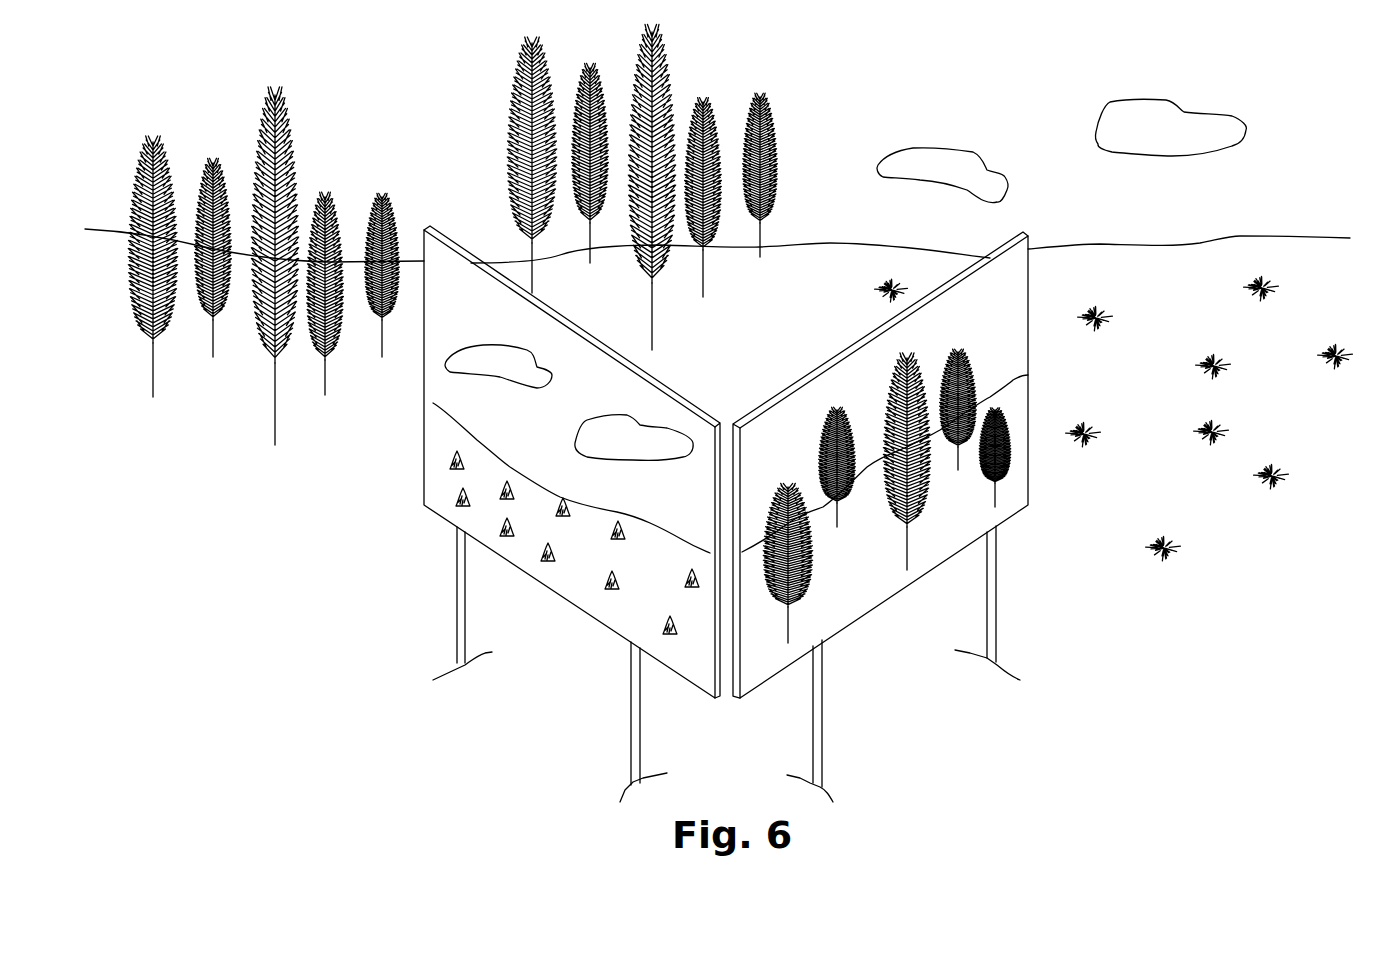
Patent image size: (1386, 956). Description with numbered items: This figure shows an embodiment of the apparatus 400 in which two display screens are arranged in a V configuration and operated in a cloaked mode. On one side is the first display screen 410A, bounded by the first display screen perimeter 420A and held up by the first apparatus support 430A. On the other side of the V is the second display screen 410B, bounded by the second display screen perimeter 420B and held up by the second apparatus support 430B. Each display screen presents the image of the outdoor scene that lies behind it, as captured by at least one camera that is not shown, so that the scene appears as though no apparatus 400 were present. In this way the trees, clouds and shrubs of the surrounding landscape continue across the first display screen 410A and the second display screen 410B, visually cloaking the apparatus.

The apparatus 400 is at (824, 152).
The first display screen 410A is at (450, 277).
The second display screen 410B is at (1022, 273).
The first display screen perimeter 420A is at (423, 432).
The second display screen perimeter 420B is at (1030, 478).
The first apparatus support 430A is at (632, 705).
The second apparatus support 430B is at (990, 611).